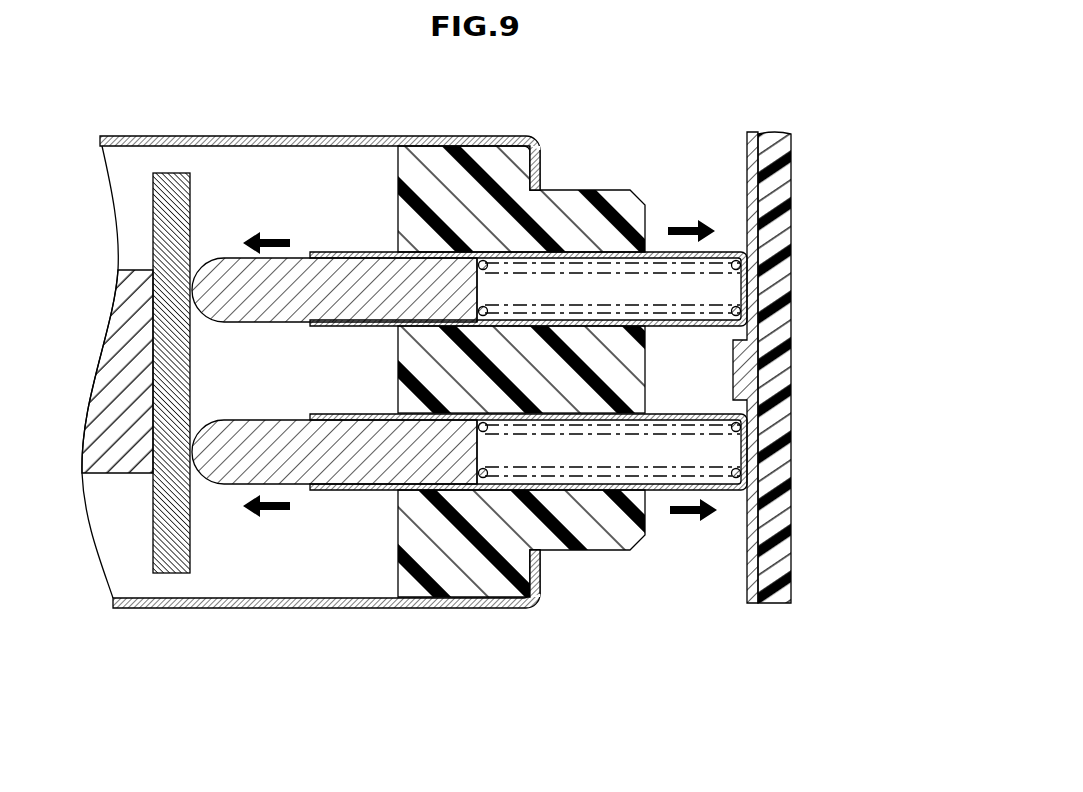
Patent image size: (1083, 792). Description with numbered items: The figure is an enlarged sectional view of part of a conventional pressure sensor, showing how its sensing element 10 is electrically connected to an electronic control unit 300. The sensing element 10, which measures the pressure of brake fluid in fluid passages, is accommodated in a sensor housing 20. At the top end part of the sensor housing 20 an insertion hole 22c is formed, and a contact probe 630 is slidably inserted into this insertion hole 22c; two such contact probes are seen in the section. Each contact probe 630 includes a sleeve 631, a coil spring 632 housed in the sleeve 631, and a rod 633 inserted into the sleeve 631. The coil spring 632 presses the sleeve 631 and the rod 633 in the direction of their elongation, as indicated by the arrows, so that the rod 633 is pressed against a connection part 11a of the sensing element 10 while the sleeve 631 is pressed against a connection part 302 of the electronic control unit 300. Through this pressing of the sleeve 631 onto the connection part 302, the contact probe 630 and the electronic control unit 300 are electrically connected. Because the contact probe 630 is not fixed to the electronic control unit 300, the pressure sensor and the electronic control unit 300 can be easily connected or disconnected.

The sensor housing 20 is at (122, 134).
The sensing element 10 is at (202, 541).
The connection part 11a is at (162, 520).
The rod 633 is at (233, 280).
The contact probe 630 is at (322, 248).
The sleeve 631 is at (352, 253).
The insertion hole 22c is at (472, 253).
The coil spring 632 is at (578, 275).
The connection part 302 is at (747, 148).
The electronic control unit 300 is at (797, 404).